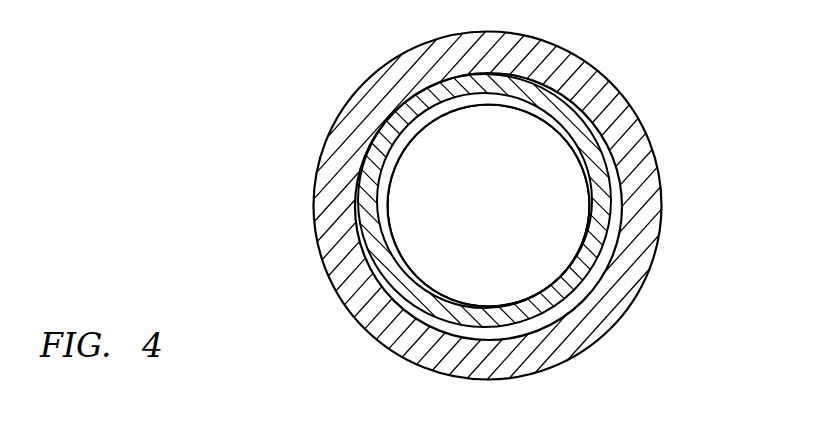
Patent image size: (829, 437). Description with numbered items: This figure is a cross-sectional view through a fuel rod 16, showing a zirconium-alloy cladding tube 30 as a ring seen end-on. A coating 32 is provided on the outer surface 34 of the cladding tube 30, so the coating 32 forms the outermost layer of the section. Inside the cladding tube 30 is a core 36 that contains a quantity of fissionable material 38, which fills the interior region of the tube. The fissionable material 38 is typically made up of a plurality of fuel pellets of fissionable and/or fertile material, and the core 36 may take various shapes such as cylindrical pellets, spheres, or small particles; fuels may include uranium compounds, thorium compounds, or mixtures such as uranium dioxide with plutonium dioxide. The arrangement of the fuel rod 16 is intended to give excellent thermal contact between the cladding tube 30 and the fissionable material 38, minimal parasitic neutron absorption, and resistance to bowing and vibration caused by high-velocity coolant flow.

The fuel rod 16 is at (489, 206).
The zirconium-alloy cladding tube 30 is at (625, 202).
The coating 32 is at (565, 283).
The outer surface 34 is at (383, 270).
The core 36 is at (438, 145).
The fissionable material 38 is at (407, 203).